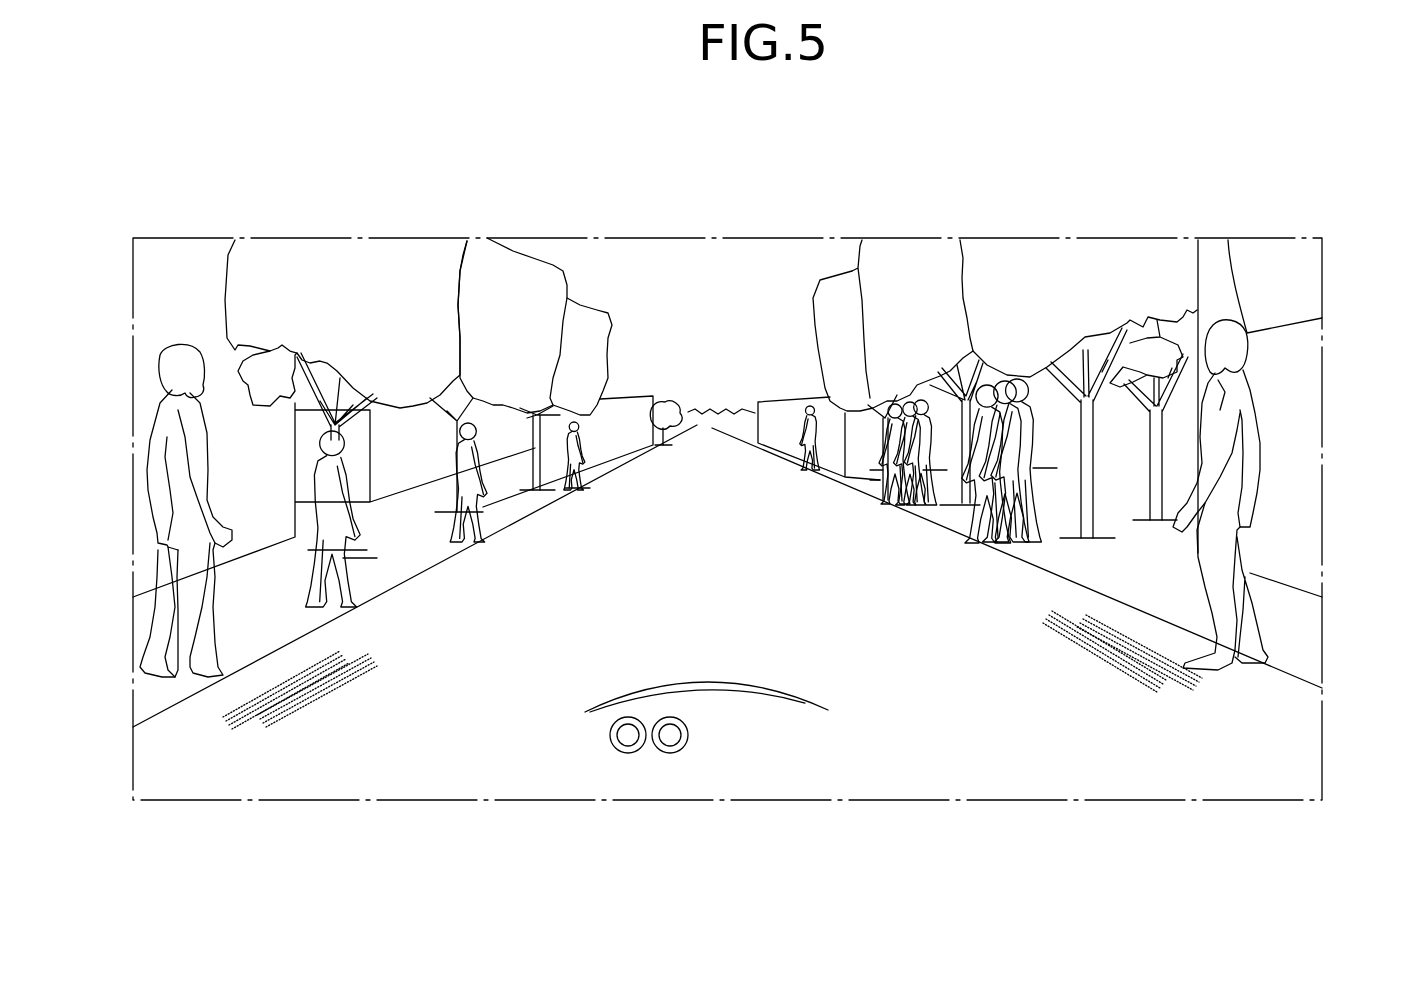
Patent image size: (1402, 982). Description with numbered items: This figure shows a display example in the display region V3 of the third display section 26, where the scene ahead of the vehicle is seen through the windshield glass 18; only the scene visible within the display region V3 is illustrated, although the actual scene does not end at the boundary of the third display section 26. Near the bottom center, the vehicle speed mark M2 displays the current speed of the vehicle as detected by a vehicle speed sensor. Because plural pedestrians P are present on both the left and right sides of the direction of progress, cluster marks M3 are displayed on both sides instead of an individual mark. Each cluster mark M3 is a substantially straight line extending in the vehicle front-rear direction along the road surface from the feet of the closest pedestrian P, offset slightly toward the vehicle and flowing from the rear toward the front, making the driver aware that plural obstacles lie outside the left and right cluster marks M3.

The windshield glass 18 is at (727, 446).
The third display section 26 is at (642, 237).
The display region V3 is at (756, 330).
The pedestrian P is at (177, 345).
The vehicle speed mark M2 is at (732, 760).
The cluster mark M3 is at (363, 660).